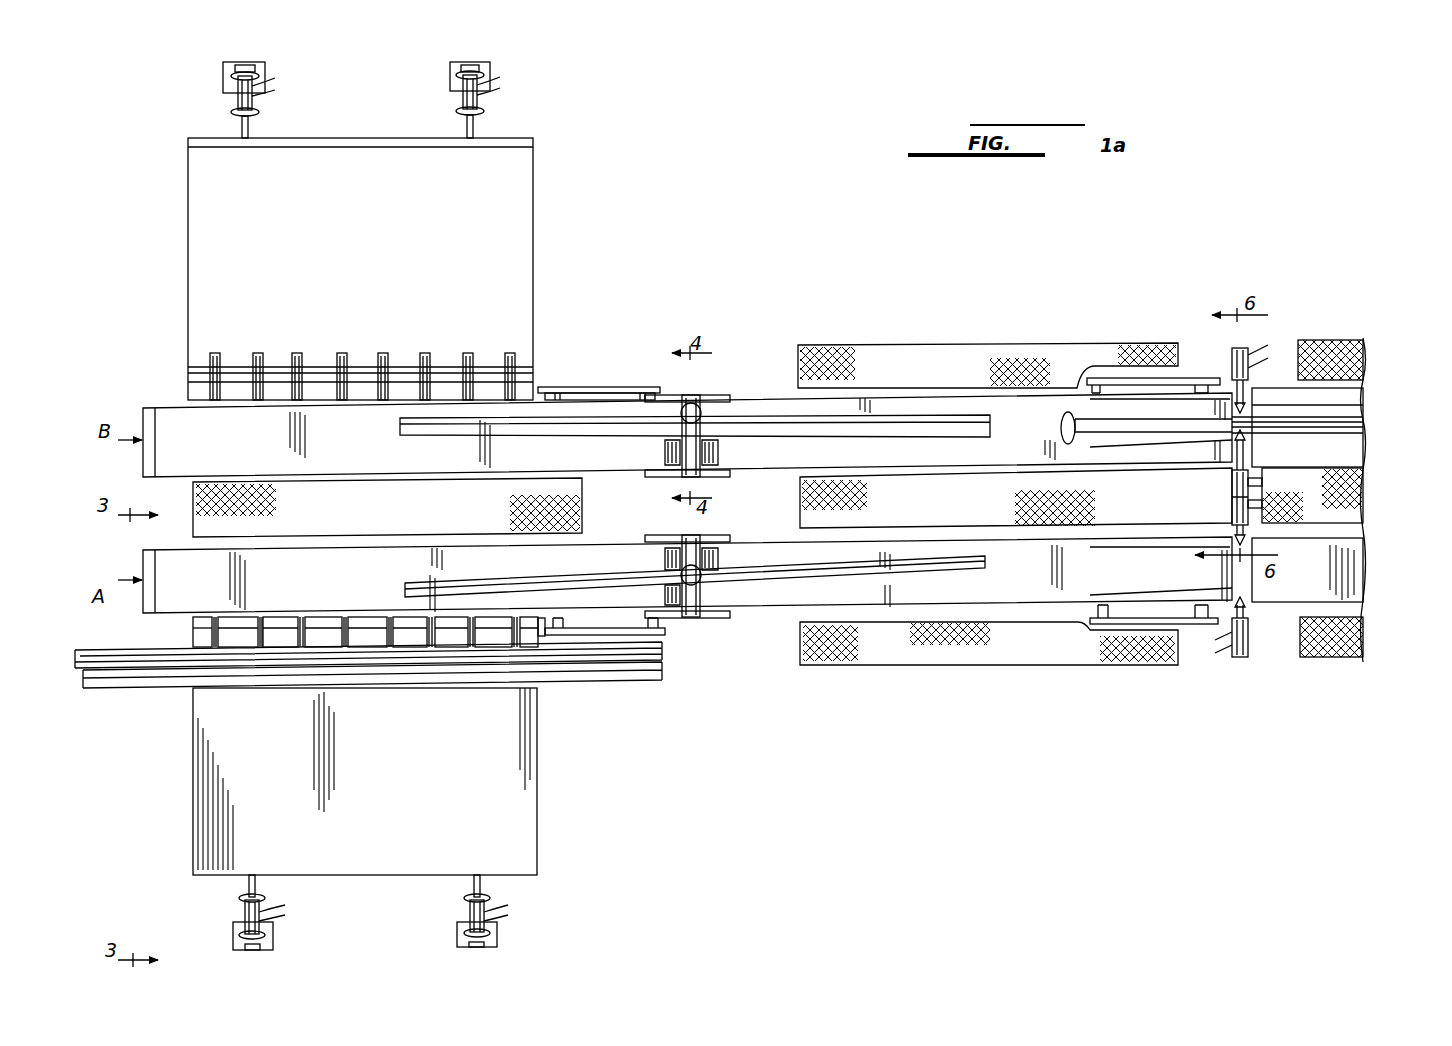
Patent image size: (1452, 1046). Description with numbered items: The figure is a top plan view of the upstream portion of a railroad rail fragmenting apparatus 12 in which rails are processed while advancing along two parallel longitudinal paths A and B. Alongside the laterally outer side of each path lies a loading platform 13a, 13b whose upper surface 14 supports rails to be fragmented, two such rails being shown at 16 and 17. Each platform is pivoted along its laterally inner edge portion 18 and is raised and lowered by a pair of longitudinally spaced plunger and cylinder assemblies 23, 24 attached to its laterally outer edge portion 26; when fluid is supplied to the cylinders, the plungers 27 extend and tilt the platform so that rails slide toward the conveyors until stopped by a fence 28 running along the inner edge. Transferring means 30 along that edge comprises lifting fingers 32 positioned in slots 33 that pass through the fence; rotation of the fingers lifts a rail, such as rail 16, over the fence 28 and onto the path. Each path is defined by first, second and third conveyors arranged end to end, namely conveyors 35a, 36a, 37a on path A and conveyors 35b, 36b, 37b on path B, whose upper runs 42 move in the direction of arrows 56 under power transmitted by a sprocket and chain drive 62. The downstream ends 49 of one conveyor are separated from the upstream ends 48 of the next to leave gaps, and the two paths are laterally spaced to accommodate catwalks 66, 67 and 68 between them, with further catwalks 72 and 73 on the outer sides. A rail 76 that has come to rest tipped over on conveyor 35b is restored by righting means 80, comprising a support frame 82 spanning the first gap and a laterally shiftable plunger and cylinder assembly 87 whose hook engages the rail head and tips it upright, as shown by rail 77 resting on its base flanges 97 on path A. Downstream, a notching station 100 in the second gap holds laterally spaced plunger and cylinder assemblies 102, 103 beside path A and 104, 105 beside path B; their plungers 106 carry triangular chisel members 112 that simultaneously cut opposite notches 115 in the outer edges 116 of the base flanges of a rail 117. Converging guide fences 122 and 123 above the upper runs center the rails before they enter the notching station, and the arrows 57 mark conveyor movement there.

The railroad rail fragmenting apparatus 12 is at (1382, 278).
The loading platform 13a is at (556, 757).
The loading platform 13b is at (553, 250).
The upper surface 14 is at (389, 252).
The rail 16 is at (655, 651).
The rail 17 is at (658, 670).
The laterally inner edge portion 18 is at (323, 400).
The plunger and cylinder assembly 23 is at (238, 93).
The plunger and cylinder assembly 24 is at (462, 98).
The laterally outer edge portion / cylinder 26 is at (262, 90).
The plunger 27 is at (250, 128).
The fence 28 is at (442, 368).
The transferring means 30 is at (205, 360).
The lifting finger 32 is at (346, 358).
The slot 33 is at (258, 358).
The first conveyor 35a is at (600, 545).
The first conveyor 35b is at (595, 470).
The second conveyor 36a is at (752, 545).
The second conveyor 36b is at (758, 468).
The third conveyor 37a is at (1352, 600).
The third conveyor 37b is at (1355, 392).
The upper run 42 is at (387, 467).
The upstream end 48 is at (143, 456).
The downstream end 49 is at (665, 452).
The arrow 56 is at (240, 437).
The direction of movement 57 is at (1048, 434).
The sprocket and chain drive 62 is at (610, 385).
The catwalk 66 is at (387, 507).
The catwalk 67 is at (963, 501).
The catwalk 68 is at (1318, 501).
The catwalk 72 is at (913, 379).
The catwalk 73 is at (1352, 345).
The rail 76 is at (555, 440).
The rail 77 is at (538, 575).
The righting means 80 is at (705, 378).
The support frame 82 is at (730, 392).
The plunger and cylinder assembly 87 is at (682, 400).
The base flange 97 is at (1068, 412).
The notching station 100 is at (1280, 345).
The plunger and cylinder assembly 102 is at (1250, 650).
The plunger and cylinder assembly 103 is at (1270, 505).
The plunger and cylinder assembly 104 is at (1226, 347).
The plunger and cylinder assembly 105 is at (1150, 505).
The plunger 106 is at (1246, 390).
The chisel member 112 is at (1245, 408).
The notch 115 is at (1352, 415).
The outer edge 116 is at (1122, 420).
The rail 117 is at (1368, 425).
The guide fence 122 is at (1112, 440).
The guide fence 123 is at (1170, 399).